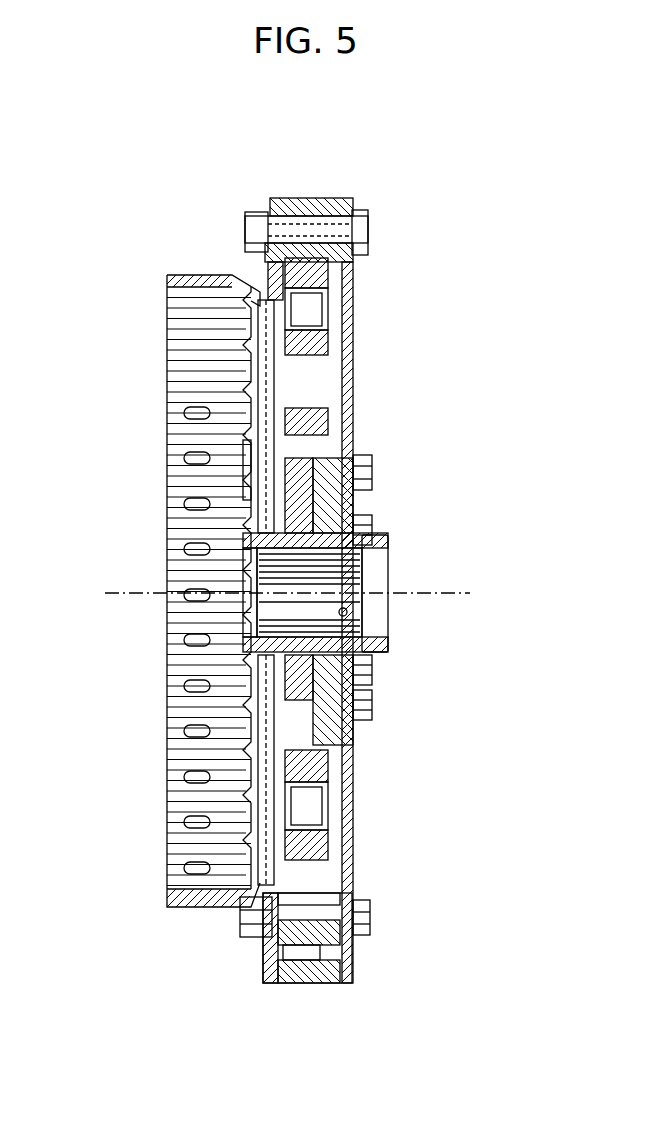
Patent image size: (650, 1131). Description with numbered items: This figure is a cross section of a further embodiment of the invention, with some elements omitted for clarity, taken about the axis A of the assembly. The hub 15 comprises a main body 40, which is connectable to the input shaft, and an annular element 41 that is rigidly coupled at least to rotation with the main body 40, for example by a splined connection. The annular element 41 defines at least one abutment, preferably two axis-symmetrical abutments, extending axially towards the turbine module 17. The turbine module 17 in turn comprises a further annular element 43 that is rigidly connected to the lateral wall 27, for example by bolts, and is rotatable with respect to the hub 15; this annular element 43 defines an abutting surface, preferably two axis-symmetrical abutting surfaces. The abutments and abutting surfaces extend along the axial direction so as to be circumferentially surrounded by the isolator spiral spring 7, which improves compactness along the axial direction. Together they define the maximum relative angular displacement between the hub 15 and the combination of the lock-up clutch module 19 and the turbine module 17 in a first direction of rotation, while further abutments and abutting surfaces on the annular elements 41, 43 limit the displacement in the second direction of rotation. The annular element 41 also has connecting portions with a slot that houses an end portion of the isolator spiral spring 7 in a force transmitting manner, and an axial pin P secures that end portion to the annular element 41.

The lock-up clutch module 19 is at (178, 272).
The annular element 41 is at (273, 482).
The turbine module 17 is at (366, 293).
The lateral wall 27 is at (356, 340).
The annular element 43 is at (362, 496).
The hub 15 is at (403, 537).
The main body 40 is at (377, 618).
The isolator spiral spring 7 is at (324, 767).
The axis A is at (107, 593).
The axial pin P is at (285, 983).